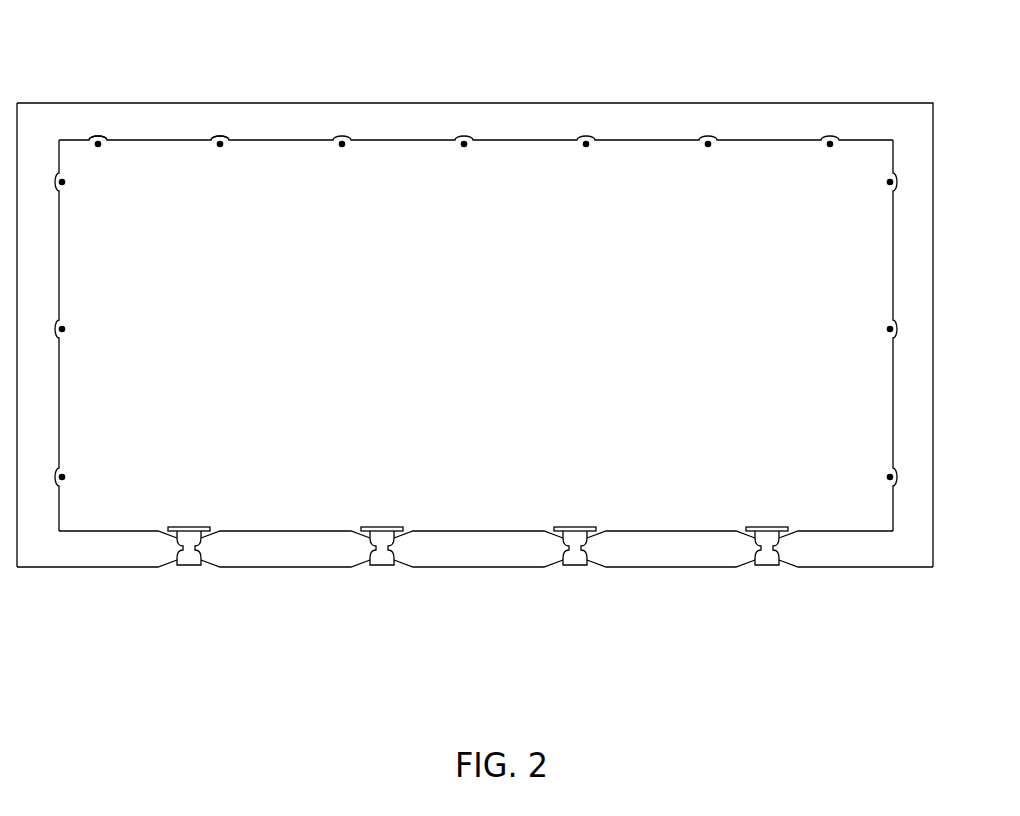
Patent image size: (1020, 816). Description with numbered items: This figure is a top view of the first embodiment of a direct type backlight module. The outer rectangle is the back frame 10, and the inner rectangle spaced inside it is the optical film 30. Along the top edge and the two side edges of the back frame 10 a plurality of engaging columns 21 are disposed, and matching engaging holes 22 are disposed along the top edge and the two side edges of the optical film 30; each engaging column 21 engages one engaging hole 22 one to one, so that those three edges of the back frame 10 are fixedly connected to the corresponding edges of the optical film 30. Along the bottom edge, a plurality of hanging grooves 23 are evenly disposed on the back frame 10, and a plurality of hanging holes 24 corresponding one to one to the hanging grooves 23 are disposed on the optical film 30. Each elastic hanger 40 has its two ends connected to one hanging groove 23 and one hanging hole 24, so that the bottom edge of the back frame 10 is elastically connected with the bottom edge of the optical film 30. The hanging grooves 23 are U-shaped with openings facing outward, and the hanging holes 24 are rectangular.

The back frame 10 is at (205, 112).
The engaging column 21 is at (97, 140).
The engaging hole 22 is at (220, 140).
The hanging groove 23 is at (362, 565).
The hanging hole 24 is at (172, 532).
The optical film 30 is at (342, 177).
The elastic hanger 40 is at (570, 548).